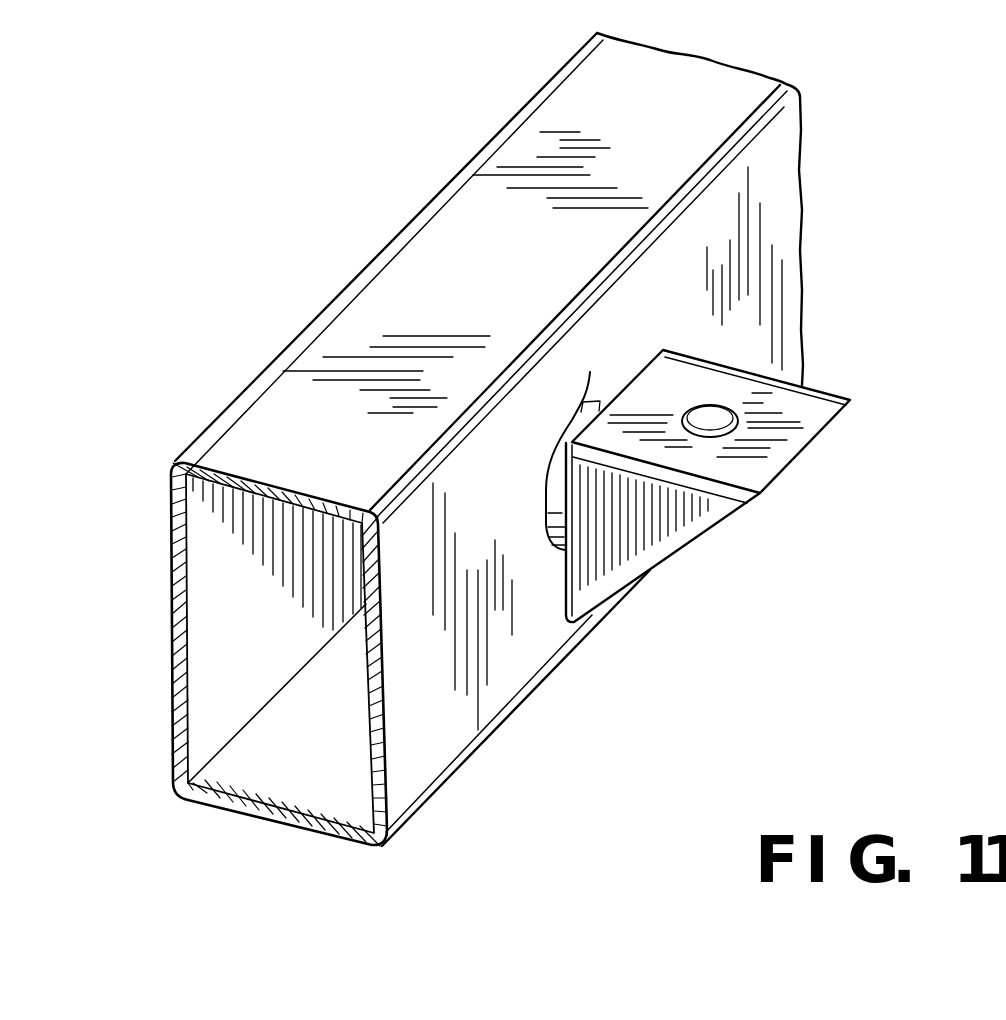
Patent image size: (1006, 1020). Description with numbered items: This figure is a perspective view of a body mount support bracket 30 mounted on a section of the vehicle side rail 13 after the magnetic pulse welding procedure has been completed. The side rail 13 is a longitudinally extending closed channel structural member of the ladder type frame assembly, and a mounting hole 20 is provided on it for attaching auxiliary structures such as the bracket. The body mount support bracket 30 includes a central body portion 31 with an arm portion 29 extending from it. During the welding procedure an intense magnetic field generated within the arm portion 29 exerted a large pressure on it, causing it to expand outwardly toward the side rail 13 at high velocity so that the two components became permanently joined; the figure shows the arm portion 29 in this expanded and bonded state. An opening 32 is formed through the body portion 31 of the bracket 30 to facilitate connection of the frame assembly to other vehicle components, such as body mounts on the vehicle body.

The side rail 13 is at (440, 730).
The mounting hole 20 is at (552, 478).
The arm portion 29 is at (590, 372).
The body mount support bracket 30 is at (770, 469).
The central body portion 31 is at (667, 530).
The opening 32 is at (720, 404).